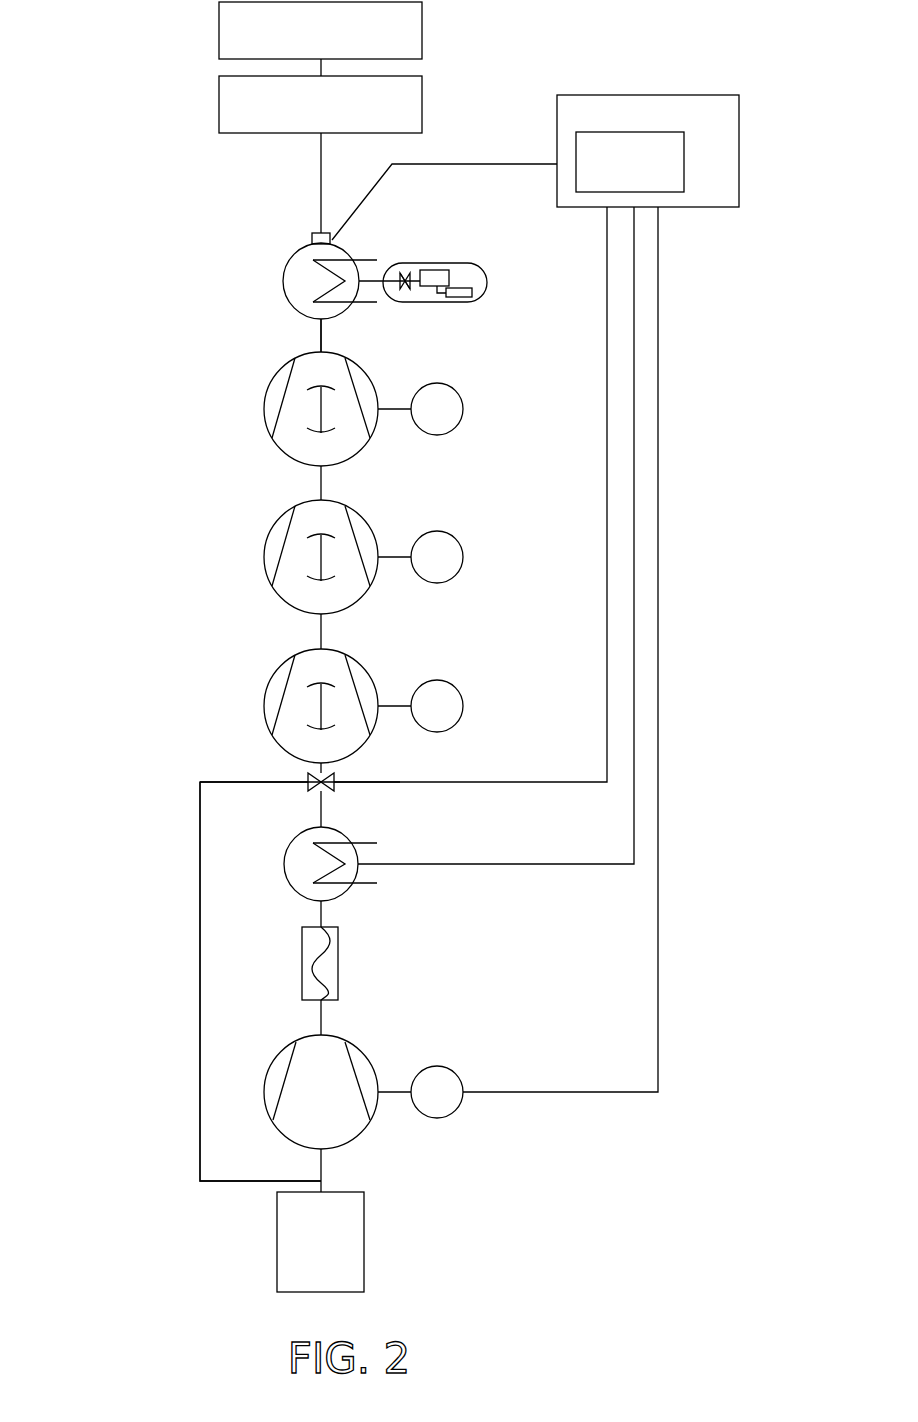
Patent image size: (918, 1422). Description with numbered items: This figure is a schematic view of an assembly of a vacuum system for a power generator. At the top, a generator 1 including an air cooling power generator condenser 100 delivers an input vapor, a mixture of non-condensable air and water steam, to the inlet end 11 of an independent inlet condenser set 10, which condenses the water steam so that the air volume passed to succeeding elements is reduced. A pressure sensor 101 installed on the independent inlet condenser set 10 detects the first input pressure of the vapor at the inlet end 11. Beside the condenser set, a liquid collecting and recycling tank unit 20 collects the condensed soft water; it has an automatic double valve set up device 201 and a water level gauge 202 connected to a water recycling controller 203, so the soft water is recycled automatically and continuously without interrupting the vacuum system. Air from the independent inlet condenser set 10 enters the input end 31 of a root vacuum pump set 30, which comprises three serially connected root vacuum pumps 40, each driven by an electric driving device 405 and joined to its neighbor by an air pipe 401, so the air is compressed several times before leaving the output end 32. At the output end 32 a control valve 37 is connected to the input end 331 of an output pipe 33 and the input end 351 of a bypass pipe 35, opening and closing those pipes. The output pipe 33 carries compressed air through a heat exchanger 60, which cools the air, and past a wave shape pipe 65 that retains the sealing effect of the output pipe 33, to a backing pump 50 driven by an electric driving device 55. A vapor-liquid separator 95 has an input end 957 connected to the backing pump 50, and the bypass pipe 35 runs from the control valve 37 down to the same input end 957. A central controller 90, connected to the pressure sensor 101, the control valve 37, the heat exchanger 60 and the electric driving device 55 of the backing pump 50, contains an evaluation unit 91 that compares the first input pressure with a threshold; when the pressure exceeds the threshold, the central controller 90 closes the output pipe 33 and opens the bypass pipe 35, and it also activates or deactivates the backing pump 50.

The generator 1 is at (320, 30).
The air cooling power generator condenser 100 is at (320, 104).
The central controller 90 is at (648, 151).
The evaluation unit 91 is at (630, 162).
The pressure sensor 101 is at (312, 232).
The inlet end 11 is at (300, 233).
The independent inlet condenser set 10 is at (282, 280).
The liquid collecting and recycling tank unit 20 is at (472, 264).
The automatic double valve set up device 201 is at (405, 272).
The water level gauge 202 is at (436, 270).
The water recycling controller 203 is at (472, 292).
The root vacuum pump set 30 is at (262, 359).
The input end 31 is at (311, 346).
The root vacuum pump 40 is at (263, 409).
The air pipe 401 is at (322, 483).
The electric driving device 405 is at (437, 436).
The output end 32 is at (302, 768).
The control valve 37 is at (333, 774).
The input end 351 is at (298, 790).
The input end 331 is at (341, 793).
The bypass pipe 35 is at (199, 943).
The output pipe 33 is at (322, 813).
The heat exchanger 60 is at (283, 864).
The wave shape pipe 65 is at (302, 962).
The backing pump 50 is at (283, 1052).
The electric driving device 55 is at (440, 1118).
The input end 957 is at (342, 1180).
The vapor-liquid separator 95 is at (277, 1230).